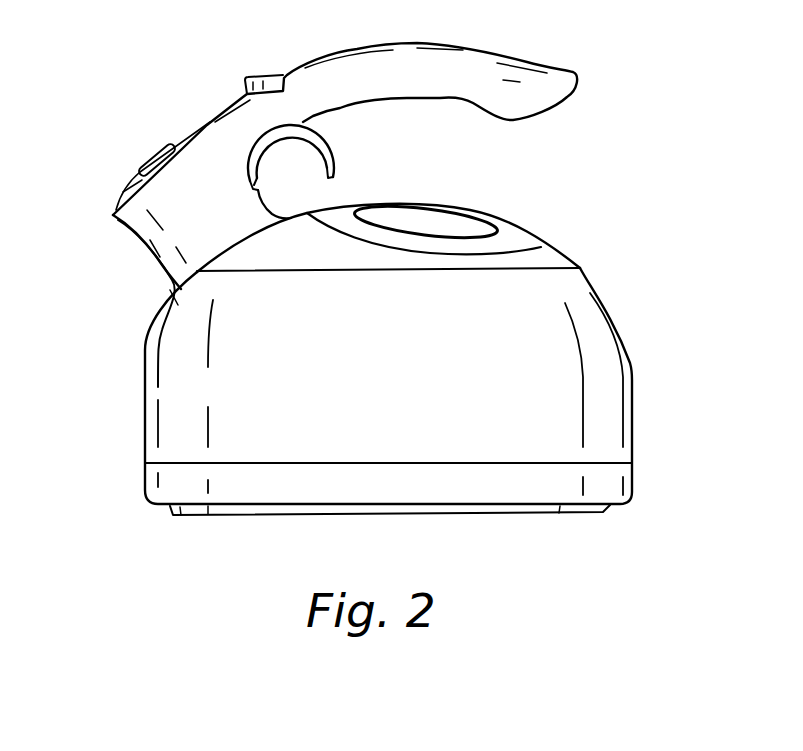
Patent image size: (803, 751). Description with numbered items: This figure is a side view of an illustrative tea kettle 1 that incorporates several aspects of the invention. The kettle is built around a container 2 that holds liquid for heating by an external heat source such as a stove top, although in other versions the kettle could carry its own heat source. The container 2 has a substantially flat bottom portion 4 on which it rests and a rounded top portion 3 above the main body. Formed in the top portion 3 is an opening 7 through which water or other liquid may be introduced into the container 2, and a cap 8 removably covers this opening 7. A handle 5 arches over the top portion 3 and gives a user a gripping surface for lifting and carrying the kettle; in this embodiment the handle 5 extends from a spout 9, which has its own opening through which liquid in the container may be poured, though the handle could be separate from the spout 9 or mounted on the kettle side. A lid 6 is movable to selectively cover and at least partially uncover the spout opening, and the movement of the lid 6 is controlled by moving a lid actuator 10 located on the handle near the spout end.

The tea kettle 1 is at (649, 65).
The container 2 is at (582, 313).
The top portion 3 is at (552, 258).
The bottom portion 4 is at (533, 513).
The handle 5 is at (477, 67).
The lid 6 is at (127, 182).
The opening 7 is at (540, 247).
The cap 8 is at (438, 213).
The spout 9 is at (143, 237).
The lid actuator 10 is at (330, 147).